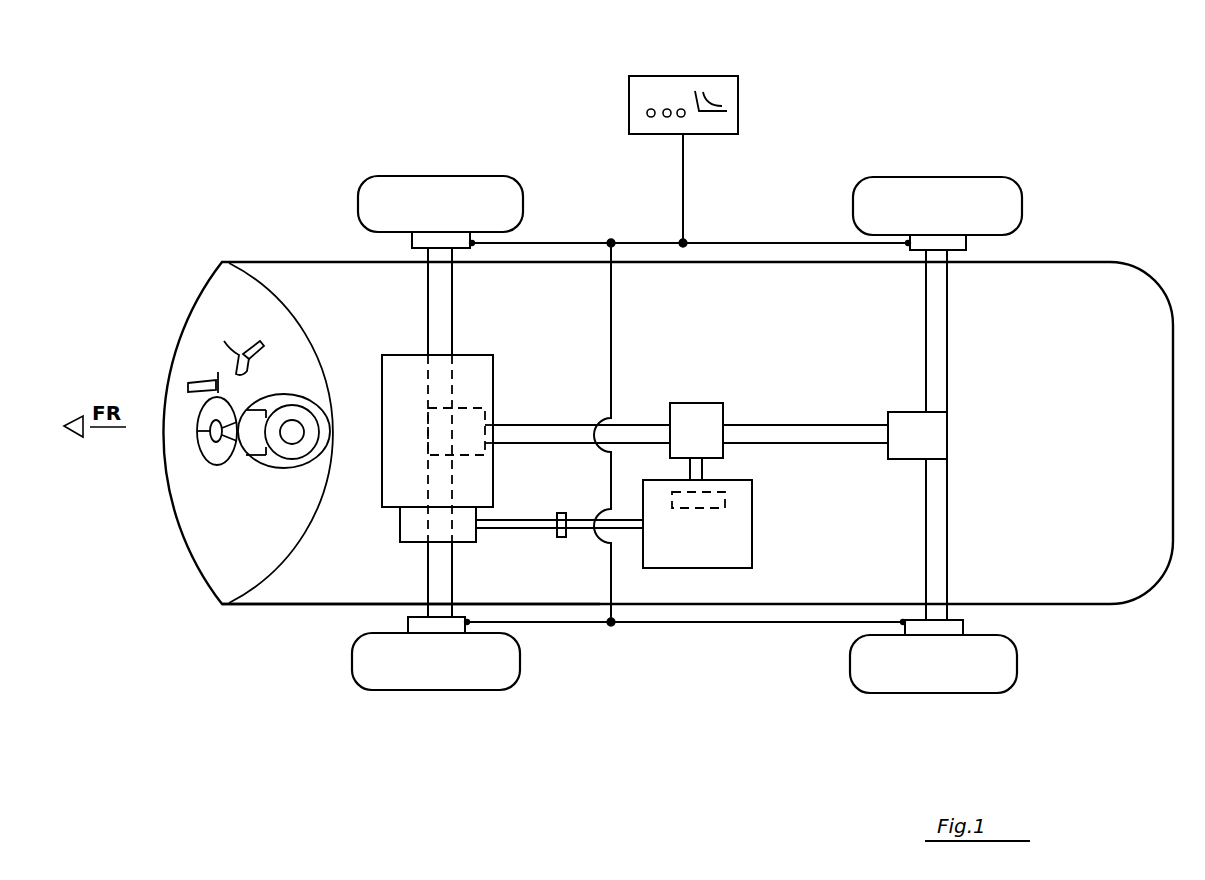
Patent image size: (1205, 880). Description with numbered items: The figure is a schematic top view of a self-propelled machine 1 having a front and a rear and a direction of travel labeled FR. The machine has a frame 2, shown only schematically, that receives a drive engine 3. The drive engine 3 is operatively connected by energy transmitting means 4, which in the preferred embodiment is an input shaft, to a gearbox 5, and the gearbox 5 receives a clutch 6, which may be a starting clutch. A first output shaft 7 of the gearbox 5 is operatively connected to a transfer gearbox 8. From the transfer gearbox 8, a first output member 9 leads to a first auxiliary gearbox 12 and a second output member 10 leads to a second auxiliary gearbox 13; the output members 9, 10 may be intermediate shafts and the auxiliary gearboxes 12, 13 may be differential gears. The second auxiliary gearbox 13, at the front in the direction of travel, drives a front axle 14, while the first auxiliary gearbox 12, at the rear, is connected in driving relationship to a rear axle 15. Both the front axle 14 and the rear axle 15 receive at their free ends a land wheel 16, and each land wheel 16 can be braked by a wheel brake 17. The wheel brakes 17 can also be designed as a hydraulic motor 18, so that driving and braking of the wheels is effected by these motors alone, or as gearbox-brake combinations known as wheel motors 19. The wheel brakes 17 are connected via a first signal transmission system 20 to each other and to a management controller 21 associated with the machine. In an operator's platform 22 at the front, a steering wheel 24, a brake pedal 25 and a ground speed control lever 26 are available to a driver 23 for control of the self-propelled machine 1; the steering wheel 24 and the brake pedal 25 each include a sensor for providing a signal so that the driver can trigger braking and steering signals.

The self-propelled machine 1 is at (183, 561).
The frame 2 is at (285, 603).
The drive engine 3 is at (407, 490).
The energy transmitting means 4 is at (538, 523).
The gearbox 5 is at (738, 553).
The clutch 6 is at (710, 505).
The first output shaft 7 is at (698, 468).
The transfer gearbox 8 is at (710, 416).
The first output member 9 is at (553, 431).
The second output member 10 is at (818, 432).
The first auxiliary gearbox 12 is at (932, 442).
The second auxiliary gearbox 13 is at (462, 410).
The front axle 14 is at (440, 302).
The rear axle 15 is at (935, 548).
The land wheel 16 is at (400, 188).
The wheel brake 17 is at (752, 422).
The hydraulic motor 18 is at (752, 422).
The wheel motor 19 is at (452, 240).
The first signal transmission system 20 is at (745, 243).
The management controller 21 is at (708, 76).
The operator's platform 22 is at (262, 532).
The driver 23 is at (292, 408).
The steering wheel 24 is at (196, 435).
The brake pedal 25 is at (190, 375).
The ground speed control lever 26 is at (247, 335).